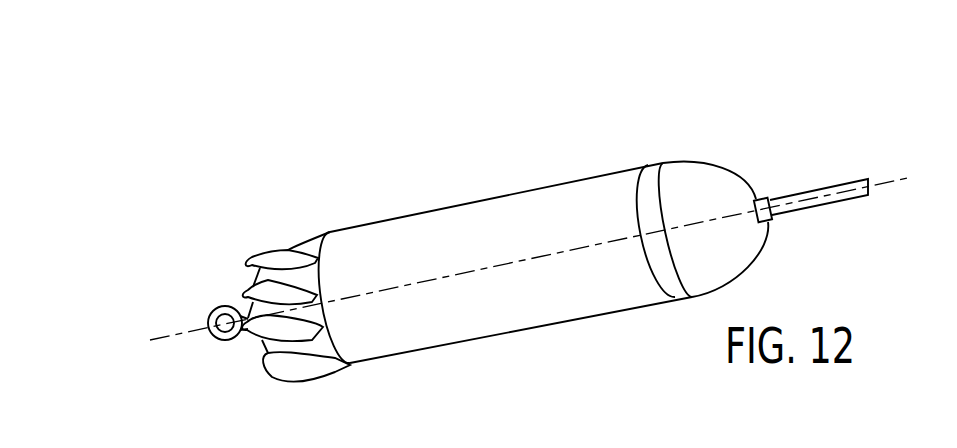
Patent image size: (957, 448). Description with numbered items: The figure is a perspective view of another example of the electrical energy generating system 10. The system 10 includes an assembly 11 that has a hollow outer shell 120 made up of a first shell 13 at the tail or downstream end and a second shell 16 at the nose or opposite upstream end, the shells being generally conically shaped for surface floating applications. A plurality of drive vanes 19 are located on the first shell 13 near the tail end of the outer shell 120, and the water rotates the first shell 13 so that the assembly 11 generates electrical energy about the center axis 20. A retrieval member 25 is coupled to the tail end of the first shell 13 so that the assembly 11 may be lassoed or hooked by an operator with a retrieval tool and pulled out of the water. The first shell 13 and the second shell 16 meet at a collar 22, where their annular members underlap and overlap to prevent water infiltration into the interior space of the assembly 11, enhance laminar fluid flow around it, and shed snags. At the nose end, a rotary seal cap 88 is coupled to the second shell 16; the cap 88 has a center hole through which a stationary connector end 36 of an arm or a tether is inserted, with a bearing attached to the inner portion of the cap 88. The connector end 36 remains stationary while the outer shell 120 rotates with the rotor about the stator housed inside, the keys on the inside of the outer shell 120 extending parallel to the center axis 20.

The system 10 is at (492, 175).
The assembly 11 is at (643, 322).
The first shell 13 is at (360, 238).
The second shell 16 is at (742, 250).
The drive vanes 19 is at (270, 260).
The center axis 20 is at (173, 332).
The collar 22 is at (658, 170).
The retrieval member 25 is at (227, 342).
The connector end 36 is at (808, 192).
The rotary seal cap 88 is at (760, 198).
The outer shell 120 is at (452, 205).